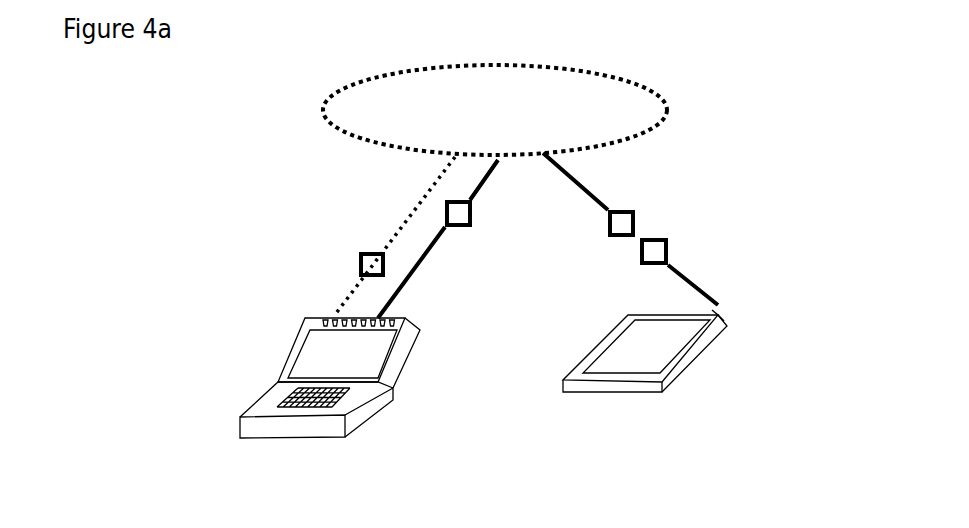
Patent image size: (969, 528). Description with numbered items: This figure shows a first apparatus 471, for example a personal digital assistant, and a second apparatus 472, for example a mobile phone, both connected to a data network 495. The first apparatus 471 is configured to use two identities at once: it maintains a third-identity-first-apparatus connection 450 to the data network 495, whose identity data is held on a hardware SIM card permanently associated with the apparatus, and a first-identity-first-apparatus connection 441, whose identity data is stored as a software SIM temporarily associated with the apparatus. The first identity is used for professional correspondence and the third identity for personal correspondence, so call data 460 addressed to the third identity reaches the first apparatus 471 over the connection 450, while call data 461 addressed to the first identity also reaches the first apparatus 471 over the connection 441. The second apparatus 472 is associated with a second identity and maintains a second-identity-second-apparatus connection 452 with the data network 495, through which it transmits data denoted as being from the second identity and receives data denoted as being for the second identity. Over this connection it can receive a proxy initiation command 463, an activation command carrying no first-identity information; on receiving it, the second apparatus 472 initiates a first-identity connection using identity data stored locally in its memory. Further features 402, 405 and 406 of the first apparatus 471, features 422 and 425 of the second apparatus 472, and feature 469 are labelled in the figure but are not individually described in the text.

The data network 495 is at (322, 107).
The first-identity-first-apparatus connection 441 is at (420, 198).
The third-identity-first-apparatus connection 450 is at (427, 258).
The call data 460 is at (472, 222).
The call data 461 is at (359, 257).
The second-identity-second-apparatus connection 452 is at (598, 198).
The proxy initiation command 463 is at (635, 212).
The device interface 469 is at (670, 242).
The input keys 402 is at (330, 318).
The display 405 is at (328, 353).
The keyboard 406 is at (298, 398).
The first apparatus 471 is at (269, 390).
The connector 422 is at (720, 307).
The display screen 425 is at (680, 340).
The second apparatus 472 is at (703, 361).